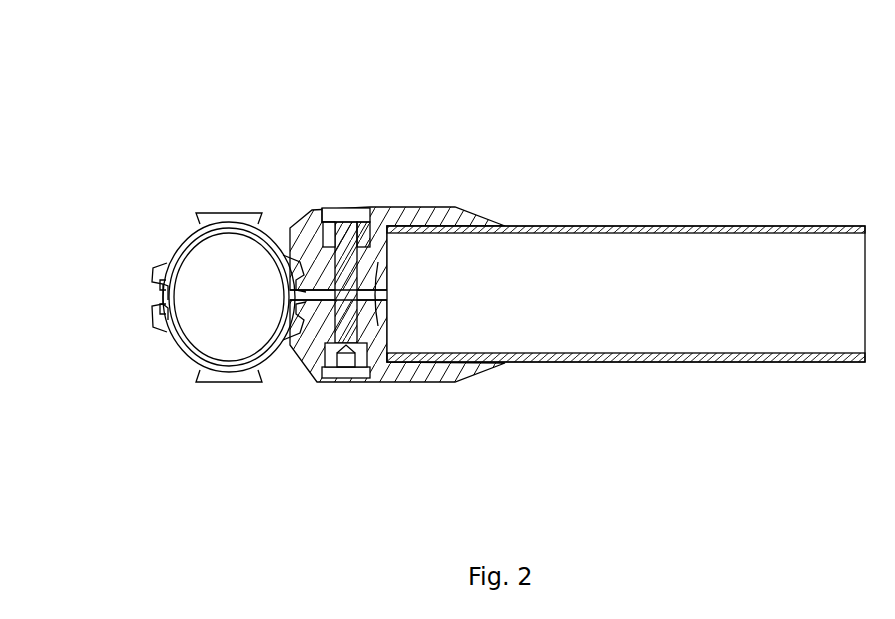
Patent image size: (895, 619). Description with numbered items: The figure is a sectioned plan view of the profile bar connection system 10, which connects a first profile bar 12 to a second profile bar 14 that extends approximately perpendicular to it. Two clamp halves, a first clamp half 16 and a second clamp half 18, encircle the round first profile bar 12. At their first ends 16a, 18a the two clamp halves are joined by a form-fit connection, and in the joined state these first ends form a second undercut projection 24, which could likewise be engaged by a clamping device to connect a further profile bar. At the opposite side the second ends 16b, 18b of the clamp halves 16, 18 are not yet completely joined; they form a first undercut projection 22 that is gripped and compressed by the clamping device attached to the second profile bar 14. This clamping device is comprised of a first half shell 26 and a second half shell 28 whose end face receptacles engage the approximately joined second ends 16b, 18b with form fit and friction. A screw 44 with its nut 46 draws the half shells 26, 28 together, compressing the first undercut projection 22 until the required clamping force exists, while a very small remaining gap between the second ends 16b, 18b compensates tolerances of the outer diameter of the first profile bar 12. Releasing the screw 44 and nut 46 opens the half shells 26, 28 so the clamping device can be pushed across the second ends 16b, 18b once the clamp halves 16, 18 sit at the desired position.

The profile bar connection system 10 is at (353, 148).
The first profile bar 12 is at (193, 250).
The second profile bar 14 is at (738, 226).
The first clamp half 16 is at (180, 250).
The first end of the first clamp half 16a is at (163, 297).
The second end of the first clamp half 16b is at (298, 258).
The second clamp half 18 is at (180, 350).
The first end of the second clamp half 18a is at (150, 318).
The second end of the second clamp half 18b is at (300, 305).
The first undercut projection 22 is at (347, 365).
The second undercut projection 24 is at (148, 283).
The first half shell 26 is at (462, 210).
The second half shell 28 is at (453, 370).
The screw 44 is at (368, 222).
The nut 46 is at (328, 208).